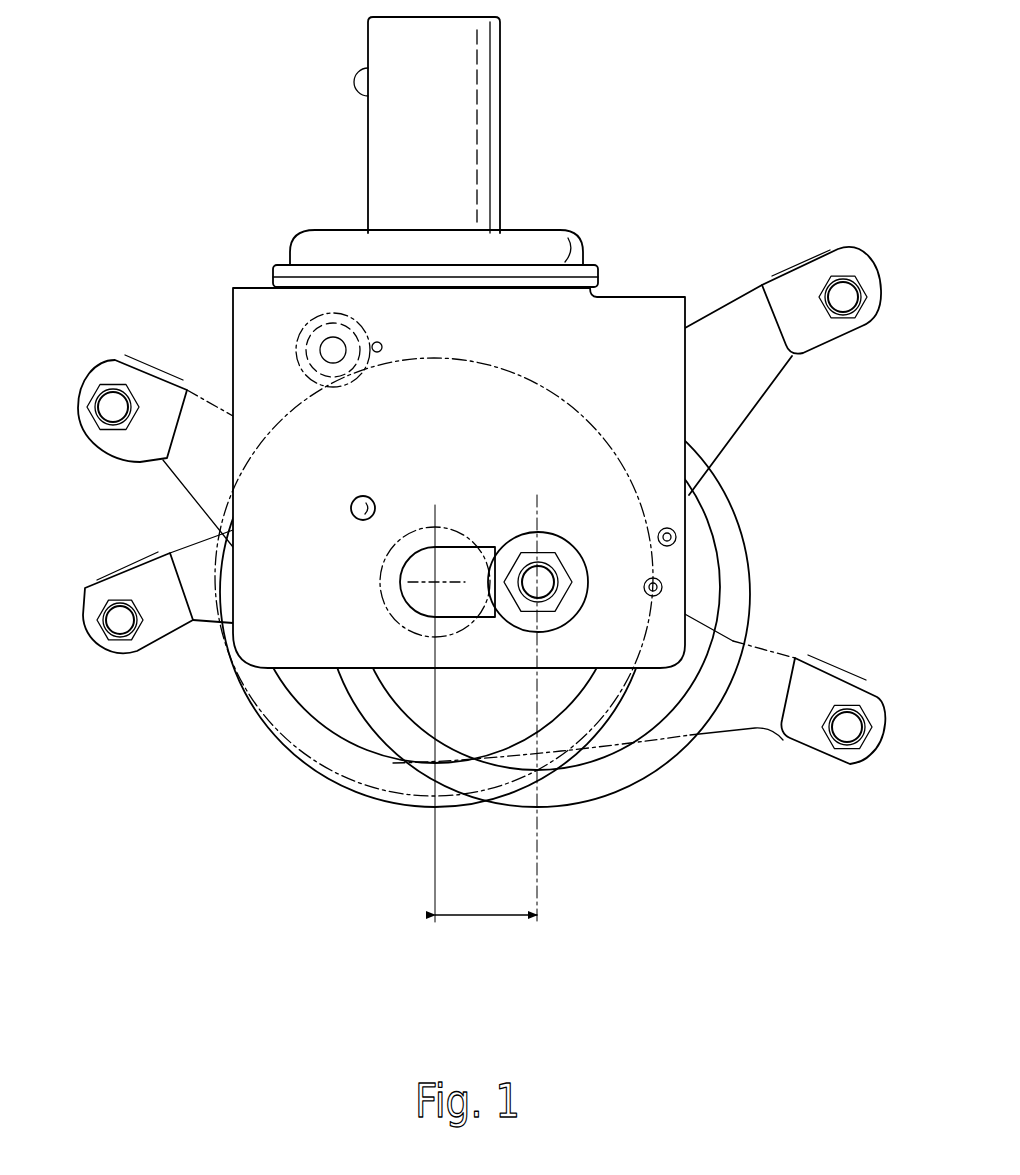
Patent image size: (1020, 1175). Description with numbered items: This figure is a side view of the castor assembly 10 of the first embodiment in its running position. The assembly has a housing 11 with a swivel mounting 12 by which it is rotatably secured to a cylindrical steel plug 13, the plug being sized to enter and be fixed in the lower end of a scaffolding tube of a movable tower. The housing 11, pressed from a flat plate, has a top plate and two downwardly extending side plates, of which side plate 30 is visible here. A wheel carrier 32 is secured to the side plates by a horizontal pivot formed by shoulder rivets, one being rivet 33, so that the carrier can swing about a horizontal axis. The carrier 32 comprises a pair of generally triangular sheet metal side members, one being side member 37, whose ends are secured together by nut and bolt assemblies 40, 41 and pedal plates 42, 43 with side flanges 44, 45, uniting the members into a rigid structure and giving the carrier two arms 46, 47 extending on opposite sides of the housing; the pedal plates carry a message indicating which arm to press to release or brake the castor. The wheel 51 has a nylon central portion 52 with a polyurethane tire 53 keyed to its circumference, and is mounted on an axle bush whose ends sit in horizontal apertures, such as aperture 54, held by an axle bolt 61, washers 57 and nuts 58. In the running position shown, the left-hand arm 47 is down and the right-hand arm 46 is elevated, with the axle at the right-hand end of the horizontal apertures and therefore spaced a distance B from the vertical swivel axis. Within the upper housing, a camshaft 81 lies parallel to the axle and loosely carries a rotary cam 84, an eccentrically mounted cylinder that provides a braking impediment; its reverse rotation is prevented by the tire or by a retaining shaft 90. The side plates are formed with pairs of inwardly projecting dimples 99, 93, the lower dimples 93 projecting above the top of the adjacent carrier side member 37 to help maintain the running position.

The castor assembly 10 is at (655, 245).
The housing 11 is at (660, 310).
The swivel mounting 12 is at (578, 244).
The cylindrical steel plug 13 is at (483, 80).
The side plate 30 is at (613, 380).
The wheel carrier 32 is at (749, 430).
The shoulder rivet 33 is at (356, 497).
The side member 37 is at (742, 396).
The nut and bolt assembly 40 is at (848, 300).
The nut and bolt assembly 41 is at (124, 621).
The pedal plate 42 is at (813, 255).
The pedal plate 43 is at (120, 574).
The side flange 44 is at (818, 327).
The side flange 45 is at (153, 583).
The right-hand arm 46 is at (845, 245).
The left-hand arm 47 is at (143, 656).
The wheel 51 is at (650, 782).
The nylon central portion 52 is at (603, 718).
The polyurethane tire 53 is at (665, 745).
The horizontal aperture 54 is at (455, 552).
The washer 57 is at (574, 602).
The nut 58 is at (556, 608).
The axle bolt 61 is at (534, 560).
The camshaft 81 is at (335, 348).
The rotary cam 84 is at (293, 353).
The retaining shaft 90 is at (383, 345).
The lower dimple 93 is at (660, 588).
The dimple 99 is at (677, 535).